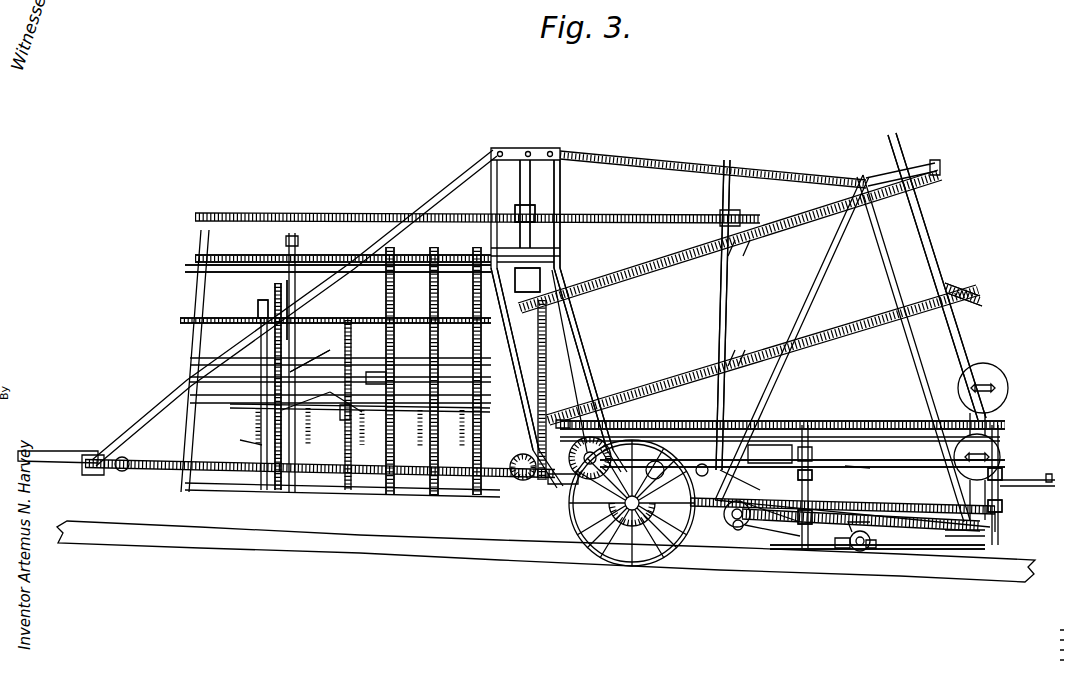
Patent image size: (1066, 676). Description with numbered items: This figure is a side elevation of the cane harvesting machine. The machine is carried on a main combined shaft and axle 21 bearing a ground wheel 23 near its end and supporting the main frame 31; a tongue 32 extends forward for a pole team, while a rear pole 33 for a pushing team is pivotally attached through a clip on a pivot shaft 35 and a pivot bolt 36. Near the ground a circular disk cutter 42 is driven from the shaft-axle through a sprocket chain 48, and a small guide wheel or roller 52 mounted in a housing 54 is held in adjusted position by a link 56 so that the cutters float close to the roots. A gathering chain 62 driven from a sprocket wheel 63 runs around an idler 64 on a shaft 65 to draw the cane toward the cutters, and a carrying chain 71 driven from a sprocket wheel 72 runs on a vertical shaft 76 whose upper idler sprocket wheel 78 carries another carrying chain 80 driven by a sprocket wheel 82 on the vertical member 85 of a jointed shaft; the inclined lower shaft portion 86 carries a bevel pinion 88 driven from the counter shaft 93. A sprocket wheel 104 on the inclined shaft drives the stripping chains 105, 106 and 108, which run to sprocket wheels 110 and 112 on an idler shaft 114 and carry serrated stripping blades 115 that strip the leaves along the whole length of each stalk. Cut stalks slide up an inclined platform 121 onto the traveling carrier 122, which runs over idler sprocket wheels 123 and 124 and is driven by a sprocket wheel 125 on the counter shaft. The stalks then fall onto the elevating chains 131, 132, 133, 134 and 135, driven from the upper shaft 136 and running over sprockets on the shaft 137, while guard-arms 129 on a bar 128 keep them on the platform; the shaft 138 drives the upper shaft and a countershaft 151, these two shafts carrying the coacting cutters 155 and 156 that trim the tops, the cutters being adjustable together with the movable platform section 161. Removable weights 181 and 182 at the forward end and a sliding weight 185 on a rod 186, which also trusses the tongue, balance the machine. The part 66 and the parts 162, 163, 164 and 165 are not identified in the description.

The main combined shaft and axle 21 is at (655, 550).
The ground wheel 23 is at (600, 552).
The main frame 31 is at (950, 536).
The tongue 32 is at (1050, 480).
The rear pole 33 is at (58, 451).
The pivot shaft 35 is at (125, 470).
The pivot bolt 36 is at (107, 475).
The circular disk cutter 42 is at (818, 549).
The sprocket chain 48 is at (730, 428).
The guide wheel or roller 52 is at (872, 543).
The housing 54 is at (872, 548).
The link 56 is at (842, 548).
The gathering chain 62 is at (933, 506).
The sprocket wheel 63 is at (811, 508).
The idler 64 is at (1010, 512).
The shaft 65 is at (1002, 476).
The gear 66 is at (696, 463).
The carrying chain 71 is at (750, 474).
The sprocket wheel 72 is at (858, 468).
The vertical shaft 76 is at (718, 327).
The idler sprocket wheel 78 is at (735, 214).
The carrying chain 80 is at (626, 223).
The sprocket wheel 82 is at (519, 208).
The vertical member of jointed shaft 85 is at (540, 183).
The lower shaft portion 86 is at (584, 372).
The bevel pinion 88 is at (580, 485).
The counter shaft 93 is at (625, 521).
The sprocket wheel 104 is at (560, 424).
The stripping chain 105 is at (543, 318).
The stripping chain 106 is at (678, 272).
The stripping chain 108 is at (680, 384).
The sprocket wheel 110 is at (922, 188).
The sprocket wheel 112 is at (952, 283).
The idler shaft 114 is at (937, 248).
The stripping blades 115 is at (745, 358).
The inclined platform 121 is at (795, 512).
The traveling carrier 122 is at (736, 528).
The idler sprocket wheel 123 is at (748, 526).
The idler sprocket wheel 124 is at (520, 484).
The sprocket wheel 125 is at (563, 484).
The bar 128 is at (422, 406).
The guard-arms 129 is at (462, 450).
The elevating chain 131 is at (504, 338).
The elevating chain 132 is at (473, 295).
The elevating chain 133 is at (433, 293).
The elevating chain 134 is at (386, 304).
The elevating chain 135 is at (270, 492).
The upper shaft 136 is at (265, 256).
The shaft 137 is at (448, 492).
The shaft 138 is at (352, 325).
The countershaft 151 is at (368, 282).
The cutter 155 is at (290, 335).
The cutter 156 is at (294, 256).
The movable platform section 161 is at (255, 445).
The link 162 is at (284, 412).
The brace 163 is at (292, 372).
The bracket 164 is at (368, 372).
The pin 165 is at (345, 422).
The removable weight 181 is at (975, 440).
The removable weight 182 is at (964, 372).
The sliding weight 185 is at (782, 442).
The rod 186 is at (906, 470).